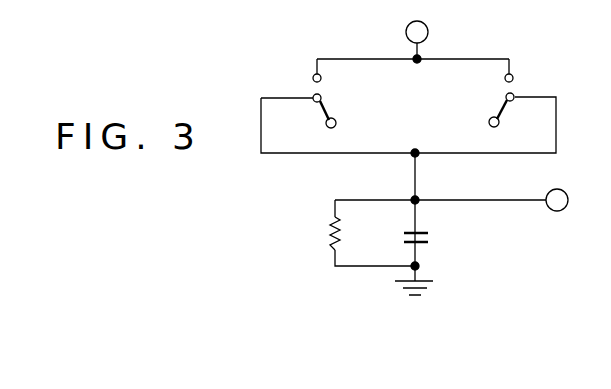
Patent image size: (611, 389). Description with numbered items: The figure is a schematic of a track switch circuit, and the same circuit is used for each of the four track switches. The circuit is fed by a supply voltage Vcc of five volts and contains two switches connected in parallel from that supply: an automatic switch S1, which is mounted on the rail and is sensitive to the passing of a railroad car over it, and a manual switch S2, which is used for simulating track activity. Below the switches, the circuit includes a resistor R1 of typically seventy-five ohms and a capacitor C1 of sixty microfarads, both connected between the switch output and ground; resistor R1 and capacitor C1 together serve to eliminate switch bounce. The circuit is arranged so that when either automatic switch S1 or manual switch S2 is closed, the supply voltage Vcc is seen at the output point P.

The supply voltage Vcc is at (440, 30).
The automatic switch S1 is at (341, 101).
The manual switch S2 is at (488, 100).
The resistor R1 is at (316, 235).
The capacitor C1 is at (439, 242).
The point P is at (568, 200).